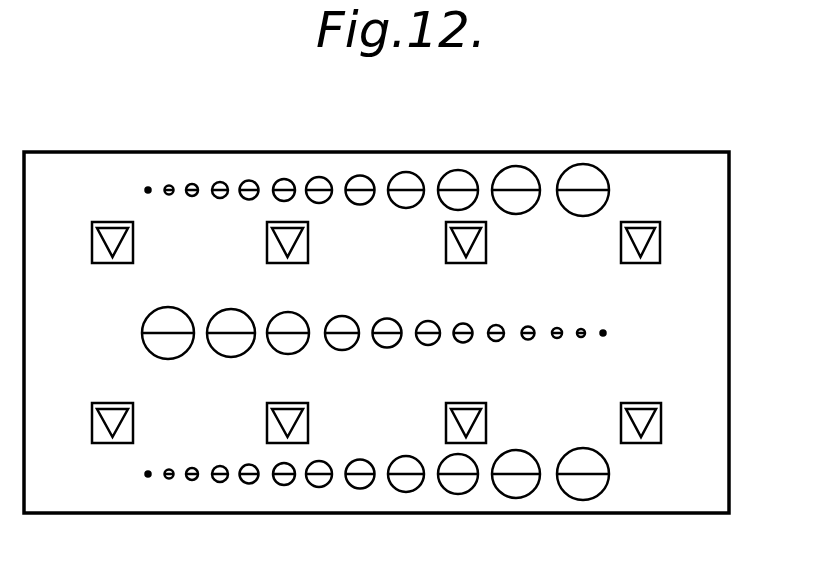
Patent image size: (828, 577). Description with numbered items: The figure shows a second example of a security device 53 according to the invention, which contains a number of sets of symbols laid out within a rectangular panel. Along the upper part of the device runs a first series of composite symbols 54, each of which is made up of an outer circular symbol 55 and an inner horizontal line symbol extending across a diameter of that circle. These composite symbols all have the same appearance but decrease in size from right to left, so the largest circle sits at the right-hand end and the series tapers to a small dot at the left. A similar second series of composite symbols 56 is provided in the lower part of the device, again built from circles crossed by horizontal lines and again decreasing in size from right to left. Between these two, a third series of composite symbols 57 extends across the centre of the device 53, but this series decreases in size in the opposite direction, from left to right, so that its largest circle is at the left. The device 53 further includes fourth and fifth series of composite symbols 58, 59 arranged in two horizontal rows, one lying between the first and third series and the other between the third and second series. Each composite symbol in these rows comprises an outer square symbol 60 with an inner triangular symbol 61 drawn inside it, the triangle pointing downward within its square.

The security device 53 is at (643, 163).
The first series of composite symbols 54 is at (617, 189).
The circular symbol 55 is at (567, 168).
The second series of composite symbols 56 is at (583, 188).
The third series of composite symbols 57 is at (133, 333).
The fourth series of composite symbols 58 is at (673, 267).
The fifth series of composite symbols 59 is at (672, 424).
The square symbol 60 is at (645, 263).
The triangular symbol 61 is at (630, 242).